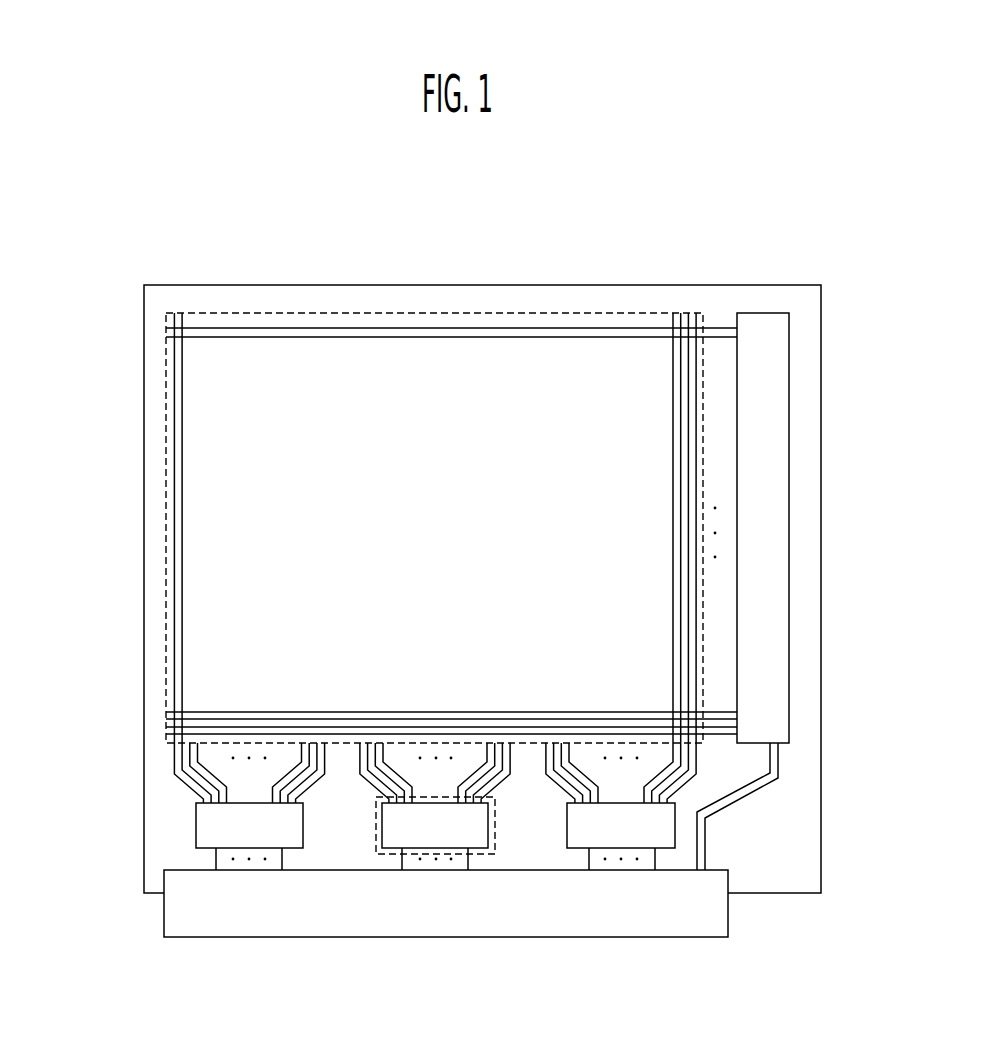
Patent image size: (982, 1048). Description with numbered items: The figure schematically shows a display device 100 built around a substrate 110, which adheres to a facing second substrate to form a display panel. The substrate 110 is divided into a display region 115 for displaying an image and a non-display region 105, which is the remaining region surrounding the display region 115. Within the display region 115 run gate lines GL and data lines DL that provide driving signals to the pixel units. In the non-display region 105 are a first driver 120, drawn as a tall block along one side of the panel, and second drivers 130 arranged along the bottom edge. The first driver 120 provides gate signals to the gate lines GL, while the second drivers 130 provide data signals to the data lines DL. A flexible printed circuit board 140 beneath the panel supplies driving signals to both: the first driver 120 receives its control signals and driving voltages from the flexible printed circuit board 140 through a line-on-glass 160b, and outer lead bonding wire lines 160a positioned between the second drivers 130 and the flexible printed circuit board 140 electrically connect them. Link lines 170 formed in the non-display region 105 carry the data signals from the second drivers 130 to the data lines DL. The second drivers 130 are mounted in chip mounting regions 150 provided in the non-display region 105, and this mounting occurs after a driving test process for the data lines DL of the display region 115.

The display device 100 is at (495, 216).
The substrate 110 is at (82, 482).
The non-display region 105 is at (144, 497).
The display region 115 is at (166, 527).
The first driver 120 is at (789, 415).
The second driver 130 is at (196, 826).
The flexible printed circuit board 140 is at (478, 930).
The chip mounting region 150 is at (376, 840).
The outer lead bonding wire line 160a is at (589, 851).
The line-on-glass 160b is at (780, 760).
The link line 170 is at (683, 785).
The gate line GL is at (447, 328).
The data line DL is at (184, 408).